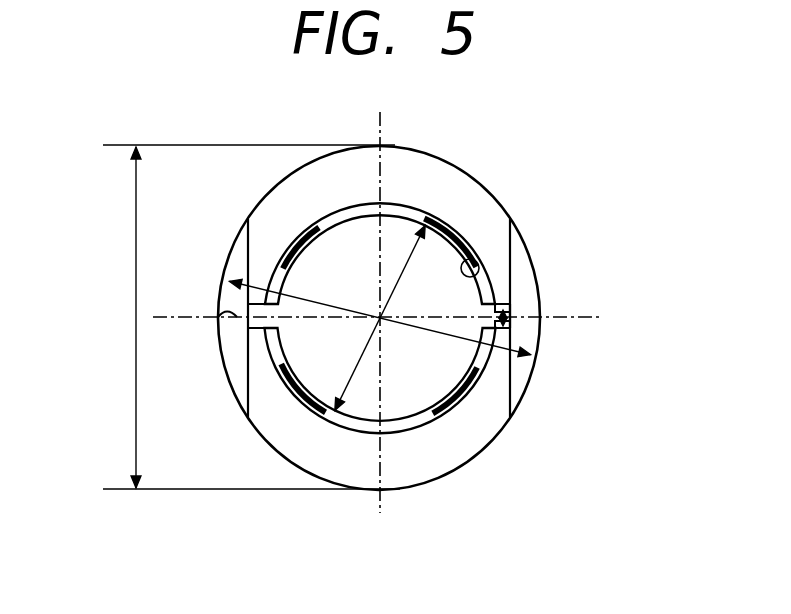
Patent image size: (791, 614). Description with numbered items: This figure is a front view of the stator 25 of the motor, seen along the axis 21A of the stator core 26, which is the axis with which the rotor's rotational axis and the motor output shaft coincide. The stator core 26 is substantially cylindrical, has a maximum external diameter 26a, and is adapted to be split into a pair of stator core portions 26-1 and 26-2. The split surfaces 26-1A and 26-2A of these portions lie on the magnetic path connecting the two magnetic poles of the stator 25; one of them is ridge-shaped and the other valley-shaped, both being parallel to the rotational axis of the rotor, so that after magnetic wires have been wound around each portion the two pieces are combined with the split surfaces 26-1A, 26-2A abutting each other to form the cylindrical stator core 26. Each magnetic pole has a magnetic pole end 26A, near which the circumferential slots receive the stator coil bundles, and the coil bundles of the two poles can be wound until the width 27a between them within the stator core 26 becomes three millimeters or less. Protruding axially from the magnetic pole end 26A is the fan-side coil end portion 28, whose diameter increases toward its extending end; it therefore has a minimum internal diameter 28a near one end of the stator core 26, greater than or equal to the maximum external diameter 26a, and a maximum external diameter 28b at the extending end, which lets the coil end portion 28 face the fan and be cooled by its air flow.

The stator 25 is at (544, 185).
The fan-side coil end portion 28 is at (465, 200).
The minimum internal diameter 28a is at (380, 318).
The maximum external diameter 28b is at (133, 257).
The stator core 26 is at (218, 352).
The maximum external diameter 26a is at (457, 340).
The magnetic pole end 26A is at (480, 265).
The stator core portion 26-1 is at (510, 296).
The stator core portion 26-2 is at (518, 358).
The split surface 26-1A is at (520, 325).
The split surface 26-2A is at (523, 313).
The width 27a is at (514, 312).
The axis 21A is at (382, 320).